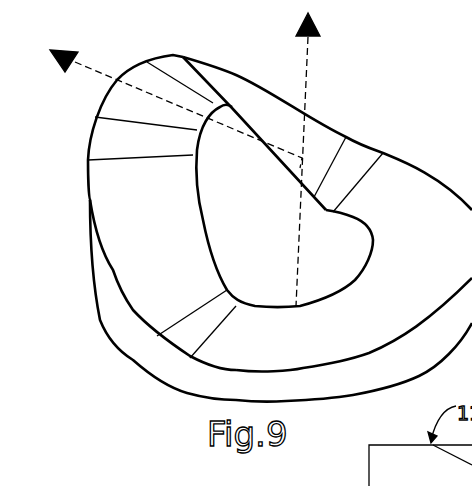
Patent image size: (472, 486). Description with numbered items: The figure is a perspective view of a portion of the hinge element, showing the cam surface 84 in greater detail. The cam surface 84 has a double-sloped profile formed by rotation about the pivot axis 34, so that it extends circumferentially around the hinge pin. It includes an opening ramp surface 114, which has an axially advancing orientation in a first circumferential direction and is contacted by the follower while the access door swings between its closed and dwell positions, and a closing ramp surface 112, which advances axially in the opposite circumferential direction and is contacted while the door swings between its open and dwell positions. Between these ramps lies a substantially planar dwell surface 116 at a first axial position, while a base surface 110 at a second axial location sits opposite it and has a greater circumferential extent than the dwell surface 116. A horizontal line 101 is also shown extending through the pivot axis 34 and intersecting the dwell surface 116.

The horizontal line 101 is at (95, 76).
The pivot axis 34 is at (308, 62).
The cam surface 84 is at (409, 167).
The dwell surface 116 is at (149, 117).
The opening ramp surface 114 is at (288, 120).
The closing ramp surface 112 is at (168, 232).
The base surface 110 is at (398, 320).